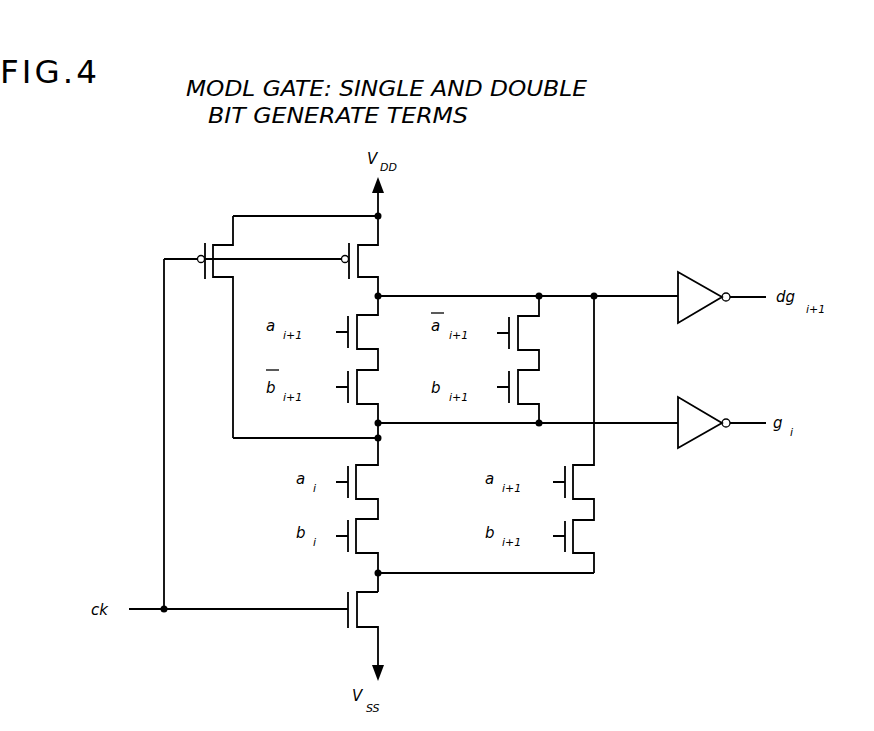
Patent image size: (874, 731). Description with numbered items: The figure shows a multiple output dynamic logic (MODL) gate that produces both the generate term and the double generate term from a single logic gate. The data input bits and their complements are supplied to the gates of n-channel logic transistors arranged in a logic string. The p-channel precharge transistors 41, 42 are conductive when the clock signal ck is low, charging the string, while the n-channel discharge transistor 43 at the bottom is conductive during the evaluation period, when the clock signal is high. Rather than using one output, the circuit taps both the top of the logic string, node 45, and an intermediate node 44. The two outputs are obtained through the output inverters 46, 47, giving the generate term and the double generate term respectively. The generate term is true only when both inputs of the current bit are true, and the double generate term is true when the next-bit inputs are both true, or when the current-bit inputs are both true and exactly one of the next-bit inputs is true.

The p-channel precharge transistor 41 is at (228, 243).
The p-channel precharge transistor 42 is at (375, 258).
The n-channel discharge transistor 43 is at (370, 617).
The intermediate node 44 is at (540, 422).
The top of the logic string 45 is at (540, 295).
The output inverter 46 is at (678, 413).
The output inverter 47 is at (700, 283).